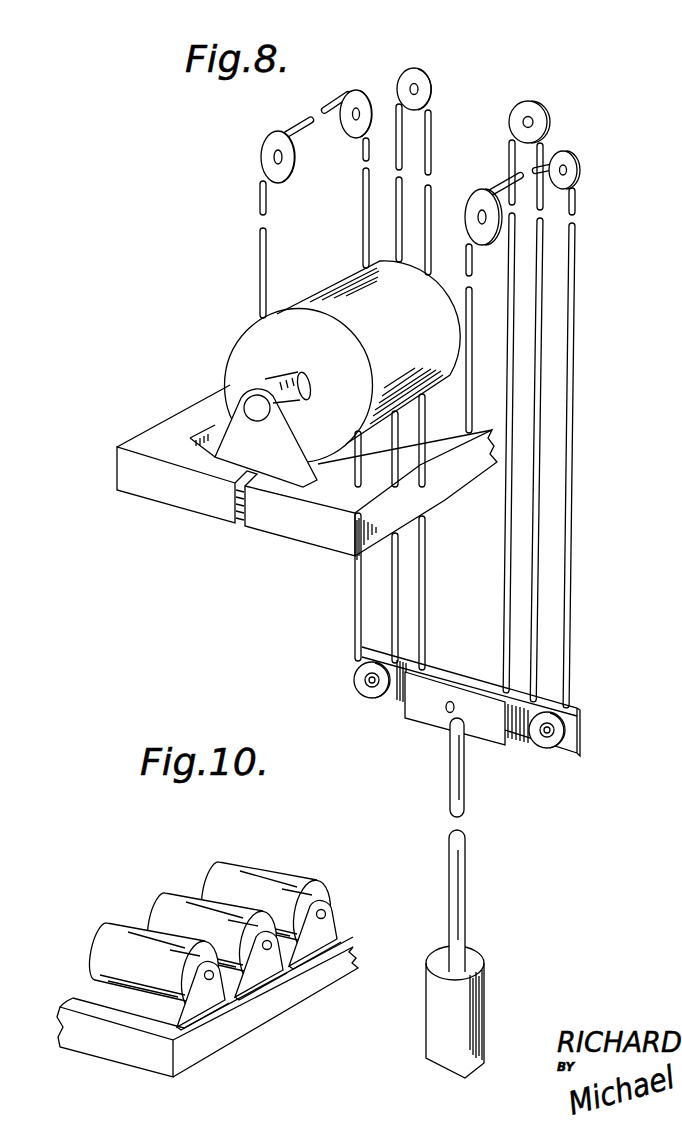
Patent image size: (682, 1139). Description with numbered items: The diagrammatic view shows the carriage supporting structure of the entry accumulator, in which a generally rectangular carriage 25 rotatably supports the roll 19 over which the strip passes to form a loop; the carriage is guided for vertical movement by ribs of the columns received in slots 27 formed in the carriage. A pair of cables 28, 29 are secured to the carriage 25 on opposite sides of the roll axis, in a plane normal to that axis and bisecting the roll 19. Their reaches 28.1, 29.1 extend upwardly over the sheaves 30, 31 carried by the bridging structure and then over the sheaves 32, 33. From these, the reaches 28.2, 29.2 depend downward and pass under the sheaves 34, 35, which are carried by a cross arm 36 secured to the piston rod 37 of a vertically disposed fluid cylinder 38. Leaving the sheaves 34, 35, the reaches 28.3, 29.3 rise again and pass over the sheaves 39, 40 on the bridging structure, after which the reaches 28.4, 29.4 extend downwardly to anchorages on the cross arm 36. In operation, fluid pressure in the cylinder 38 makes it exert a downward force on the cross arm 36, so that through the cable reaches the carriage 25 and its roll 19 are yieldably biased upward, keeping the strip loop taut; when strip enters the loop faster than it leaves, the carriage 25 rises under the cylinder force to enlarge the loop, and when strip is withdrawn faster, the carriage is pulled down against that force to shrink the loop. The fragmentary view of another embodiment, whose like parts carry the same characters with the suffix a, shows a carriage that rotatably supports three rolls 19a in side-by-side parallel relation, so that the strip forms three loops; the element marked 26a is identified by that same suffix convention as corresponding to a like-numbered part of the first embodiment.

In FIG. 8, the roll 19 is at (247, 336).
In FIG. 8, the carriage 25 is at (187, 492).
In FIG. 8, the slot 27 is at (236, 518).
In FIG. 8, the cable 28 is at (465, 300).
In FIG. 8, the cable reach 28.1 is at (467, 318).
In FIG. 8, the cable reach 28.2 is at (571, 328).
In FIG. 8, the cable reach 28.3 is at (536, 507).
In FIG. 8, the cable reach 28.4 is at (505, 608).
In FIG. 8, the cable 29 is at (258, 247).
In FIG. 8, the cable reach 29.1 is at (266, 262).
In FIG. 8, the cable reach 29.2 is at (360, 608).
In FIG. 8, the cable reach 29.3 is at (397, 548).
In FIG. 8, the cable reach 29.4 is at (424, 567).
In FIG. 8, the sheave 30 is at (478, 203).
In FIG. 8, the sheave 31 is at (283, 173).
In FIG. 8, the sheave 32 is at (575, 167).
In FIG. 8, the sheave 33 is at (355, 131).
In FIG. 8, the sheave 34 is at (555, 745).
In FIG. 8, the sheave 35 is at (380, 700).
In FIG. 8, the cross arm 36 is at (493, 732).
In FIG. 8, the piston rod 37 is at (452, 762).
In FIG. 8, the fluid cylinder 38 is at (467, 993).
In FIG. 8, the sheave 39 is at (537, 112).
In FIG. 8, the sheave 40 is at (421, 84).
In FIG. 10, the roll 19a is at (102, 936).
In FIG. 10, the base 26a is at (228, 1035).